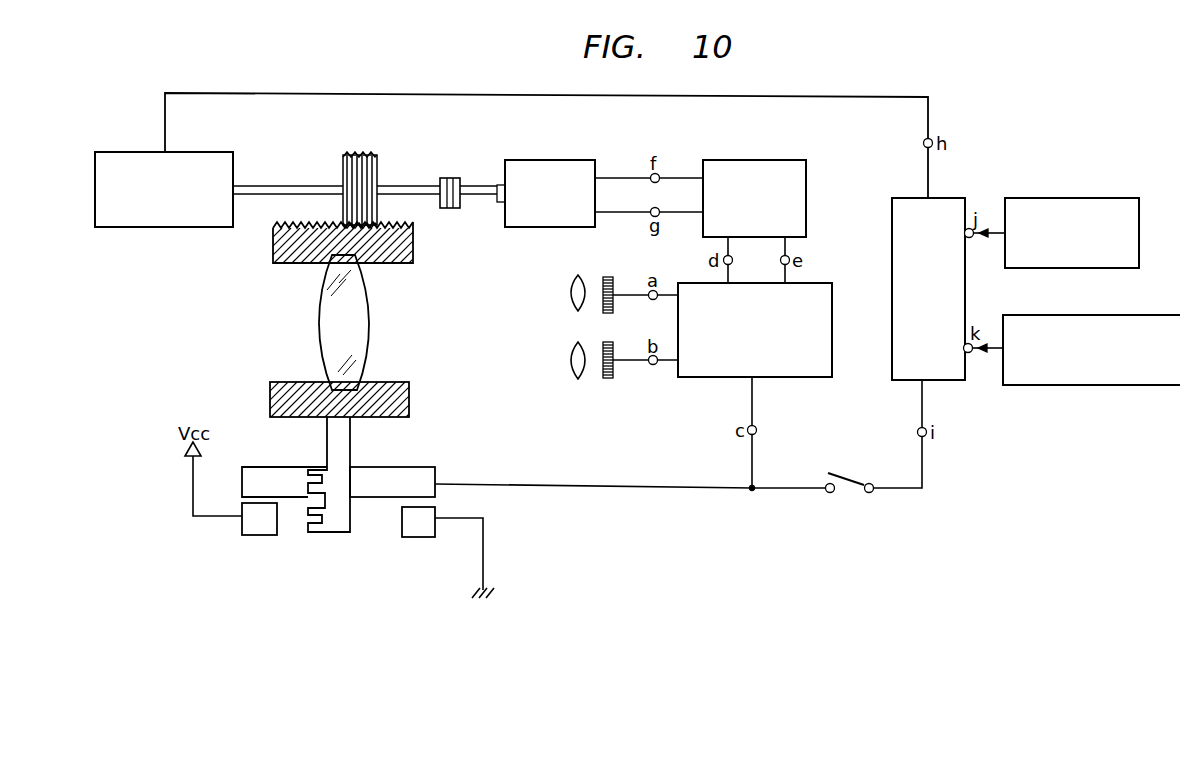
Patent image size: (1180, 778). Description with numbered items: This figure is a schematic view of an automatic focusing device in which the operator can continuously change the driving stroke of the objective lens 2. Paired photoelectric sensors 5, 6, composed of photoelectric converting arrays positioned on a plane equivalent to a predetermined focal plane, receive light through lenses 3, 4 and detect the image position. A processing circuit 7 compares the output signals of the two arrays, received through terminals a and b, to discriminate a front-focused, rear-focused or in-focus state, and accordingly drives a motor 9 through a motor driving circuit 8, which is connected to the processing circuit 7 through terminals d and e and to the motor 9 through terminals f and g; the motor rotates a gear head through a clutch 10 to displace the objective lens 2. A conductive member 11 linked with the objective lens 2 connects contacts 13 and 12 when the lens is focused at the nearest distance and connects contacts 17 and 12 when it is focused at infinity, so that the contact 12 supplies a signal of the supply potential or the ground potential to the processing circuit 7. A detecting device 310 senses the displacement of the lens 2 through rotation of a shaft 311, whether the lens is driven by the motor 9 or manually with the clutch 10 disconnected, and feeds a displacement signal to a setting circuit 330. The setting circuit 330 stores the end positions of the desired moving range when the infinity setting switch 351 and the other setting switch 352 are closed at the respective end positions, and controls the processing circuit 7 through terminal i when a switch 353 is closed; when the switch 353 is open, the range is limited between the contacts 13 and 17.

The detecting device 310 is at (213, 152).
The shaft 311 is at (273, 186).
The clutch 10 is at (451, 178).
The motor 9 is at (548, 160).
The motor driving circuit 8 is at (752, 160).
The processing circuit 7 is at (834, 340).
The lens 3 is at (570, 292).
The lens 4 is at (570, 360).
The photoelectric sensor 5 is at (608, 277).
The photoelectric sensor 6 is at (608, 380).
The objective lens 2 is at (370, 334).
The conductive member 11 is at (327, 445).
The contact 12 is at (425, 467).
The contact 13 is at (259, 538).
The contact 17 is at (416, 540).
The setting circuit 330 is at (950, 198).
The infinity setting switch 351 is at (1073, 198).
The setting switch 352 is at (1071, 315).
The switch 353 is at (846, 474).